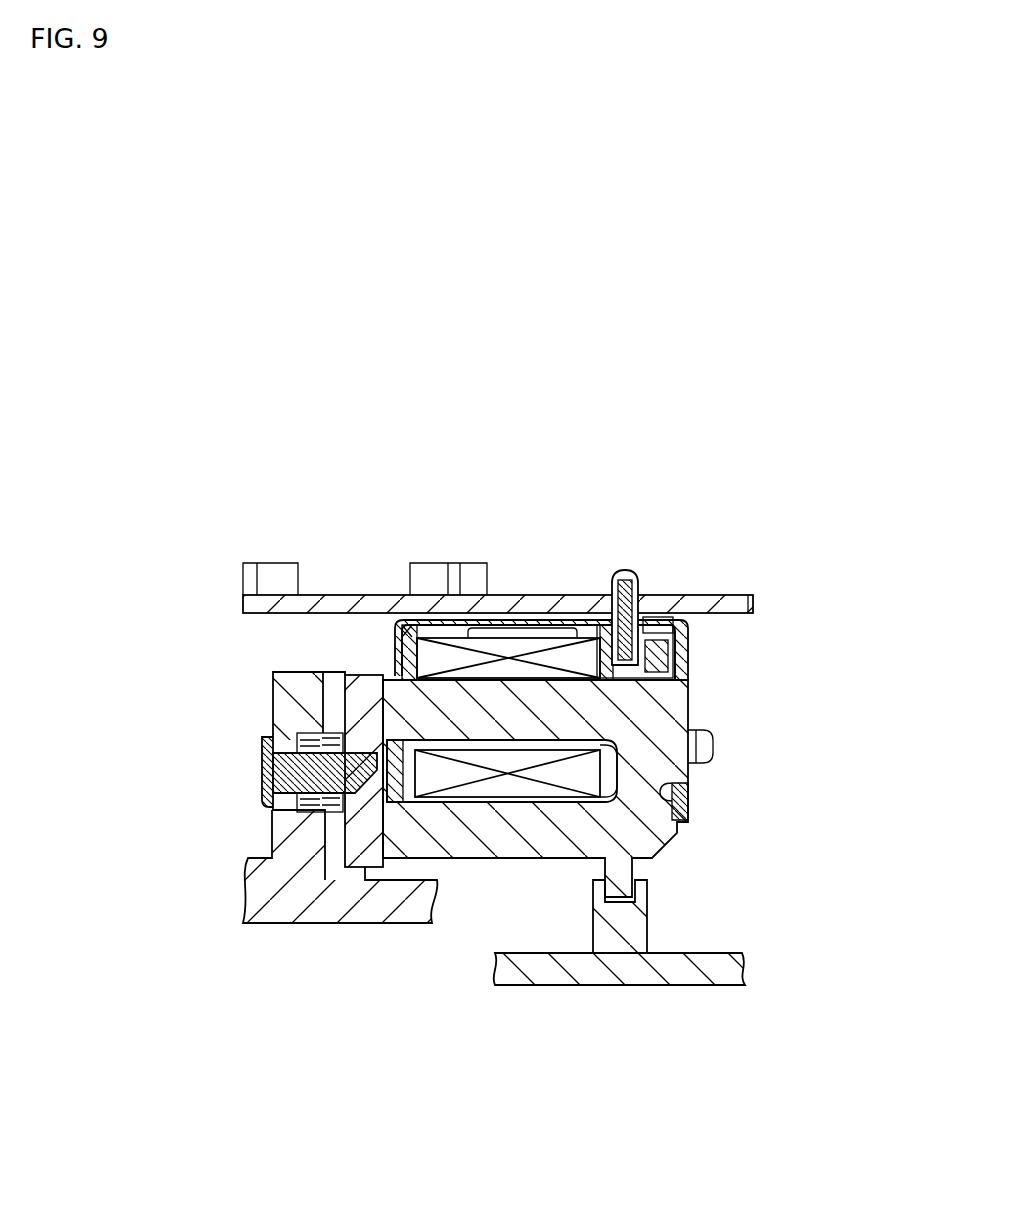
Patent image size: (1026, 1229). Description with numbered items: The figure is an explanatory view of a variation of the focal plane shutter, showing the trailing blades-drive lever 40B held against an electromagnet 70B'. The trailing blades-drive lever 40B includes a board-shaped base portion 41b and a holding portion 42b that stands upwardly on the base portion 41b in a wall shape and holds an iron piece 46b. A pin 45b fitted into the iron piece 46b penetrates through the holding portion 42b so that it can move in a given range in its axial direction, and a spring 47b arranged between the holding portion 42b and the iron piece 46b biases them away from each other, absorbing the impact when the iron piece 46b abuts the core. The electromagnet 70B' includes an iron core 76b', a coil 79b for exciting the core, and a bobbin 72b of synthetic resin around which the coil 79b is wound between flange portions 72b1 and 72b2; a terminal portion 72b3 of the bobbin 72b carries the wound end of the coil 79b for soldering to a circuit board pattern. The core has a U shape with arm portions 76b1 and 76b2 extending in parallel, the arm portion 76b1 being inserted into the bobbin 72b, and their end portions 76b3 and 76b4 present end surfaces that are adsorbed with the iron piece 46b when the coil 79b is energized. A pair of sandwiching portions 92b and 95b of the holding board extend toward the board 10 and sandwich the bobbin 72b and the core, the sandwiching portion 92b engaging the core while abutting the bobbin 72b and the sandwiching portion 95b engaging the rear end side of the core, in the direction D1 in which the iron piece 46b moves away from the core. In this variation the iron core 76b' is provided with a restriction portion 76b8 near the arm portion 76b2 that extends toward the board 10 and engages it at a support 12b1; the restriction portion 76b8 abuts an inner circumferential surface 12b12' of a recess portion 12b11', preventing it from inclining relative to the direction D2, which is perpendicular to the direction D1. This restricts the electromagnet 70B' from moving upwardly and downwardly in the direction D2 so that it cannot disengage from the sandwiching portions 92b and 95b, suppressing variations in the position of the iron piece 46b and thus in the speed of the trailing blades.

The board 10 is at (645, 993).
The support portion 12b1 is at (623, 930).
The recess portion 12b11' is at (761, 900).
The inner circumferential surface 12b12' is at (582, 979).
The trailing blades-drive lever 40B is at (270, 948).
The base portion 41b is at (250, 862).
The holding portion 42b is at (270, 683).
The pin 45b is at (275, 772).
The iron piece 46b is at (352, 700).
The spring 47b is at (313, 730).
The electromagnet 70B' is at (799, 746).
The bobbin 72b is at (653, 657).
The flange portion 72b1 is at (403, 617).
The flange portion 72b2 is at (597, 620).
The terminal portion 72b3 is at (627, 570).
The iron core 76b' is at (781, 694).
The arm portion 76b1 is at (497, 693).
The arm portion 76b2 is at (530, 837).
The end portion 76b3 is at (413, 632).
The end portion 76b4 is at (412, 833).
The restriction portion 76b8 is at (620, 888).
The coil 79b is at (555, 660).
The sandwiching portion 92b is at (400, 615).
The sandwiching portion 95b is at (682, 640).
The direction D1 is at (490, 970).
The direction D2 is at (430, 940).